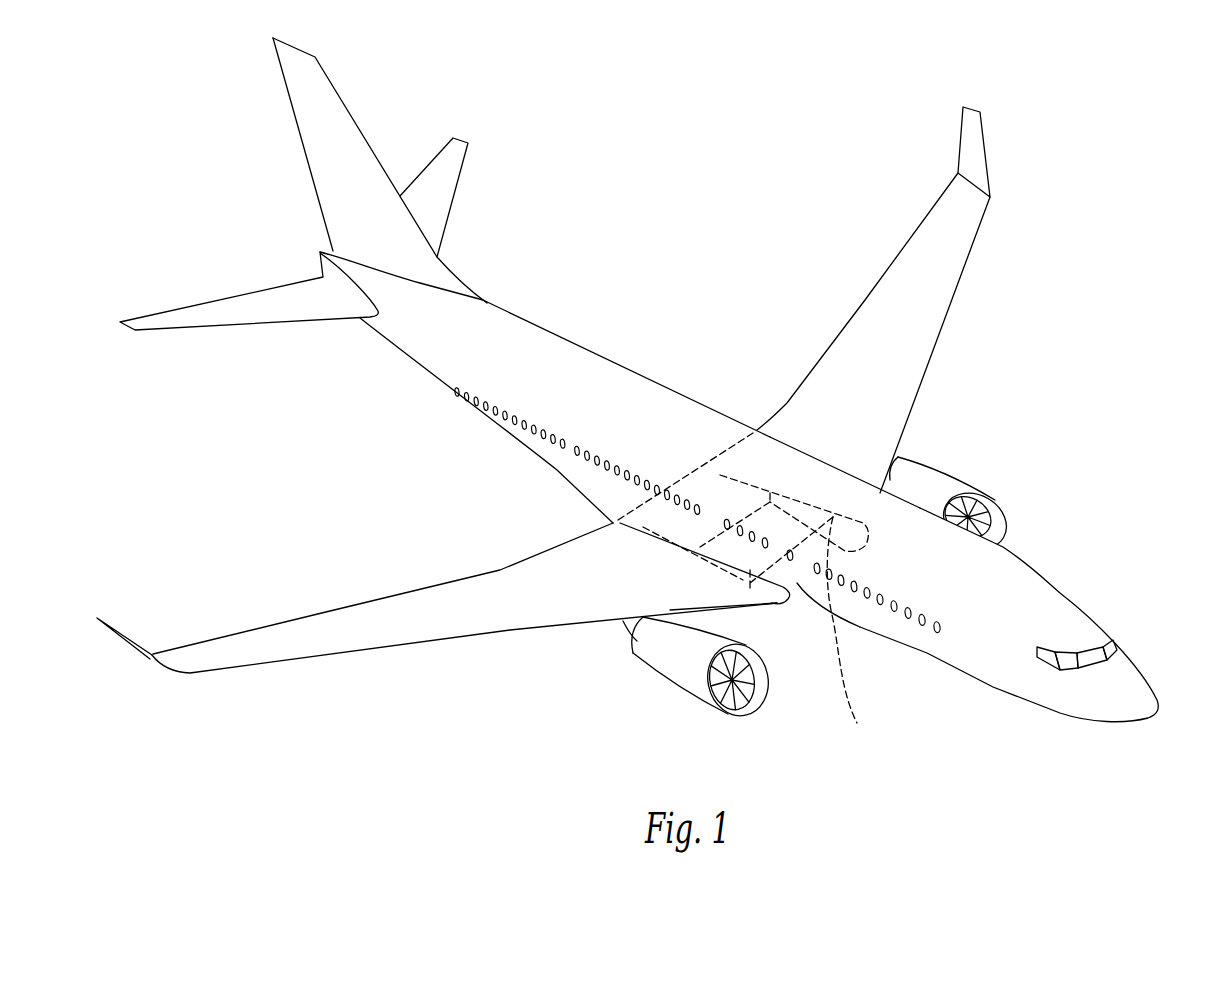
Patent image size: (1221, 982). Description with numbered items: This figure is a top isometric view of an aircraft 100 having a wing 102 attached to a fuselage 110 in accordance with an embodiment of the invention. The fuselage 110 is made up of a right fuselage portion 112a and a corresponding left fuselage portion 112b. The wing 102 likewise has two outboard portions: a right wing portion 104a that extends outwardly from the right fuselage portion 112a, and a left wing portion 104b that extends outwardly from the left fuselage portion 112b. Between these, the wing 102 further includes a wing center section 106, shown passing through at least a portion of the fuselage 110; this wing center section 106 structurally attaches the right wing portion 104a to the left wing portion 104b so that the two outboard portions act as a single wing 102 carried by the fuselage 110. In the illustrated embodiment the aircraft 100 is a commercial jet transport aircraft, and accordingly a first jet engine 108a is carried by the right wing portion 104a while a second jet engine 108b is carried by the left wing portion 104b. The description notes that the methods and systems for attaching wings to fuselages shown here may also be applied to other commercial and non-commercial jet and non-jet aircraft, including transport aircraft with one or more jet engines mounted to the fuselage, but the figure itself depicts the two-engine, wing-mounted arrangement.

The aircraft 100 is at (1048, 413).
The wing 102 is at (310, 623).
The right wing portion 104a is at (427, 643).
The left wing portion 104b is at (952, 308).
The wing center section 106 is at (756, 588).
The first jet engine 108a is at (683, 697).
The second jet engine 108b is at (1000, 512).
The fuselage 110 is at (1048, 588).
The right fuselage portion 112a is at (557, 470).
The left fuselage portion 112b is at (705, 407).